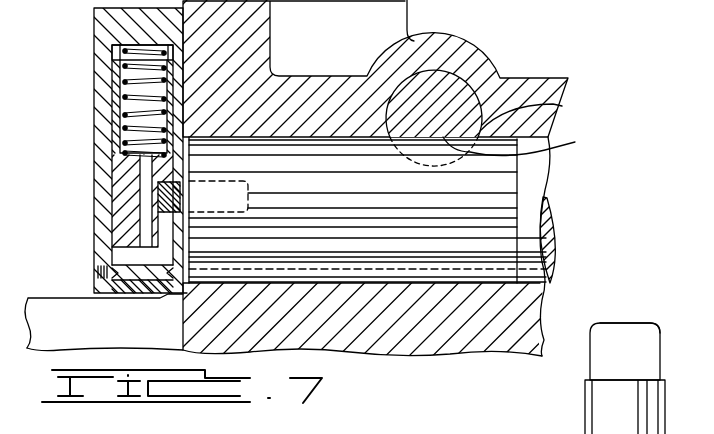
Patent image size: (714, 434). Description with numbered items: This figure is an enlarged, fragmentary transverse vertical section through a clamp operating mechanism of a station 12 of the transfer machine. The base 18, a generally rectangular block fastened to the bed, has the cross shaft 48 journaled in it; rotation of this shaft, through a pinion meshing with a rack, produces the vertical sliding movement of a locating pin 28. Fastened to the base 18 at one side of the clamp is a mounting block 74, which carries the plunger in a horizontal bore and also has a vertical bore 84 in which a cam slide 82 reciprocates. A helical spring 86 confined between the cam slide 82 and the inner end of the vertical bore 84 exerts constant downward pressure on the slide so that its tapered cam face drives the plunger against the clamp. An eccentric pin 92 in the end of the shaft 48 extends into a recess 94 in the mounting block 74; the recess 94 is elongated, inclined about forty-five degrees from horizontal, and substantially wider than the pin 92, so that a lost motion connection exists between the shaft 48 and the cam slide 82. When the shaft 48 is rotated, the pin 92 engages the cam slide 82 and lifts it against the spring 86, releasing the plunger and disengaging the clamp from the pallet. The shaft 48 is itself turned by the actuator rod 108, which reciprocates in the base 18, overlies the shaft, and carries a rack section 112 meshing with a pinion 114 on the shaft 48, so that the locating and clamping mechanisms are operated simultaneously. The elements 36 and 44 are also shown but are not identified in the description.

The station 12 is at (560, 43).
The base 18 is at (514, 318).
The locating pin 28 is at (645, 418).
The cap 36 is at (657, 349).
The cap top 44 is at (657, 324).
The cross shaft 48 is at (537, 181).
The mounting block 74 is at (100, 23).
The cam slide 82 is at (119, 170).
The vertical bore 84 is at (121, 118).
The helical spring 86 is at (120, 75).
The eccentric pin 92 is at (173, 195).
The recess 94 is at (165, 232).
The actuator rod 108 is at (446, 88).
The rack section 112 is at (537, 115).
The pinion 114 is at (524, 147).